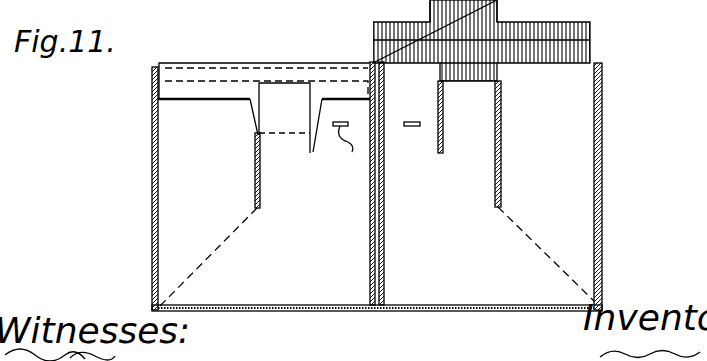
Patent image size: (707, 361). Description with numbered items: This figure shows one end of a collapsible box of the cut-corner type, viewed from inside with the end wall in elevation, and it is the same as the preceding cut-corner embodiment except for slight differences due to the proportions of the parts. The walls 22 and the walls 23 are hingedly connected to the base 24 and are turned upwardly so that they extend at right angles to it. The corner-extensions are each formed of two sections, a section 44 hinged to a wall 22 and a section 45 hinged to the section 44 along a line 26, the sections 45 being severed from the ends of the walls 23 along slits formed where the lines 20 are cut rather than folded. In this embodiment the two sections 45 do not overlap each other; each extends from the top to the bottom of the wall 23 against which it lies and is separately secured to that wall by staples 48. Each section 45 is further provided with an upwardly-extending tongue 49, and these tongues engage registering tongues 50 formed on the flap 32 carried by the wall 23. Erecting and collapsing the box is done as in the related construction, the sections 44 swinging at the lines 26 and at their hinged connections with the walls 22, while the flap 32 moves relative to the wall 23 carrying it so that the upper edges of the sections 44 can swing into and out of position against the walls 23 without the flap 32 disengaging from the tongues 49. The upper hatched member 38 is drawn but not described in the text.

The lines 20 is at (264, 49).
The walls 22 is at (152, 239).
The walls 23 is at (375, 307).
The base 24 is at (318, 311).
The lines 26 is at (225, 242).
The flap 32 is at (342, 72).
The upper column 38 is at (493, 10).
The sections 44 is at (372, 187).
The sections 45 is at (382, 253).
The staples 48 is at (410, 126).
The tongue 49 is at (277, 92).
The tongues 50 is at (257, 113).